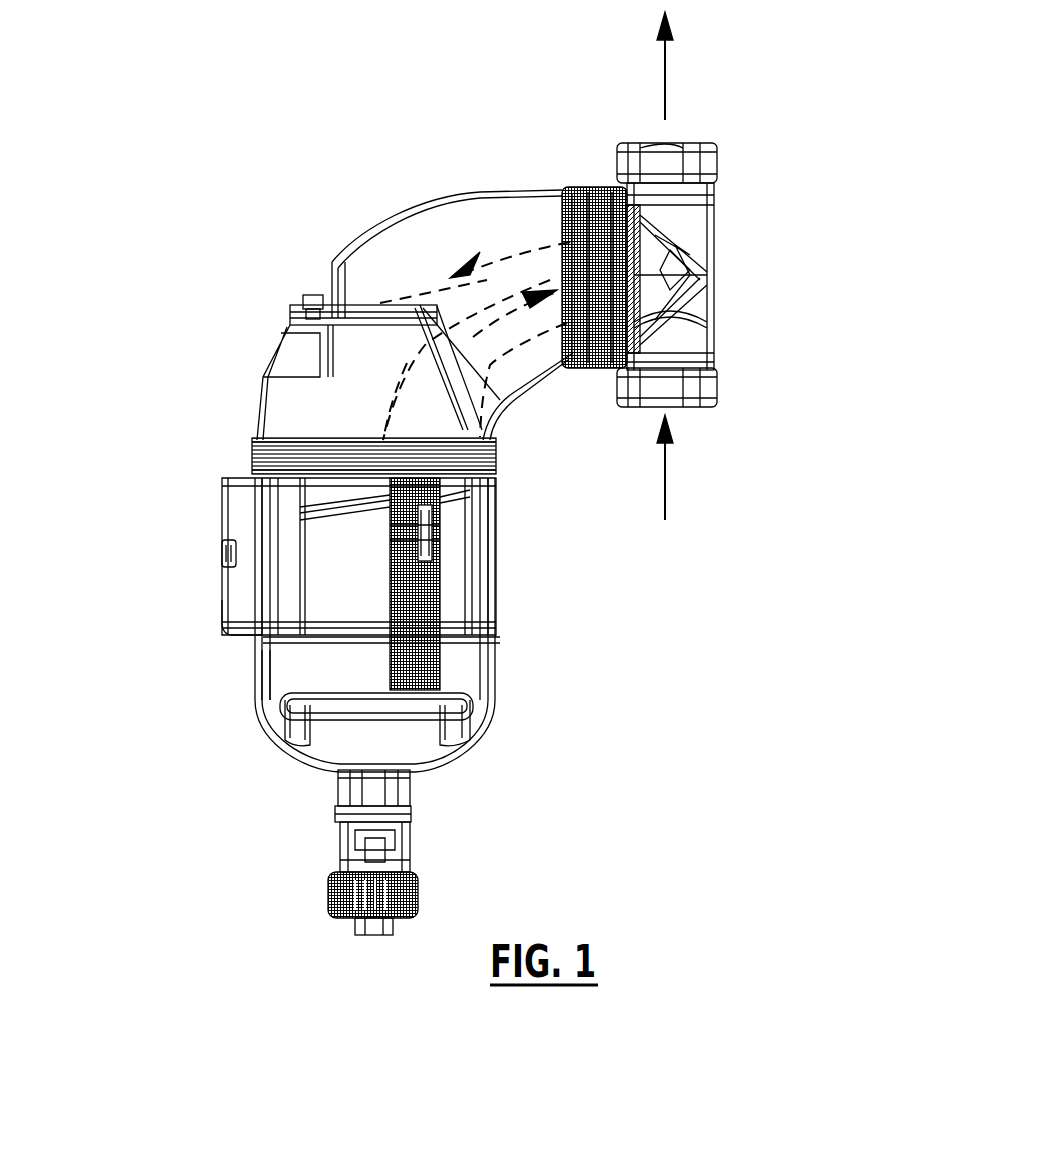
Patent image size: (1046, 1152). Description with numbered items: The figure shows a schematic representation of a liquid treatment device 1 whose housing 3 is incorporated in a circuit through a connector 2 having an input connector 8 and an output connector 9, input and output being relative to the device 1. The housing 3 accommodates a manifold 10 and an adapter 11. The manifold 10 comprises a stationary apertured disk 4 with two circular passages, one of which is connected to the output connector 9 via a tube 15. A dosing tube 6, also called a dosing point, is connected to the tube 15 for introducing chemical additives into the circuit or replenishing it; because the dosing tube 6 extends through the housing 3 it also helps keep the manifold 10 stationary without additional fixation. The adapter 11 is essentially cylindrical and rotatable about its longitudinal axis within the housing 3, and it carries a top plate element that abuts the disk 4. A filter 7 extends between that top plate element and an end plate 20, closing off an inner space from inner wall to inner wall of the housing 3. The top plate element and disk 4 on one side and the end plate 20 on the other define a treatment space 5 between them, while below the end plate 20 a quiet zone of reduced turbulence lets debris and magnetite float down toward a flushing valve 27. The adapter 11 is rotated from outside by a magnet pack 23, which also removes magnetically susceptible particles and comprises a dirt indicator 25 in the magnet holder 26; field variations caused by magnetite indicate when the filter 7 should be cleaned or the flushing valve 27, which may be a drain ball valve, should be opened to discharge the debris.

The device 1 is at (218, 150).
The connector 2 is at (740, 258).
The housing 3 is at (415, 205).
The stationary apertured disk 4 is at (290, 450).
The treatment space 5 is at (272, 667).
The dosing tube 6 is at (298, 313).
The filter 7 is at (410, 550).
The input connector 8 is at (708, 388).
The output connector 9 is at (710, 165).
The manifold 10 is at (492, 233).
The adapter 11 is at (315, 640).
The tube 15 is at (410, 360).
The end plate 20 is at (345, 705).
The magnet pack 23 is at (235, 515).
The dirt indicator 25 is at (222, 553).
The magnet holder 26 is at (218, 606).
The flushing valve 27 is at (385, 855).